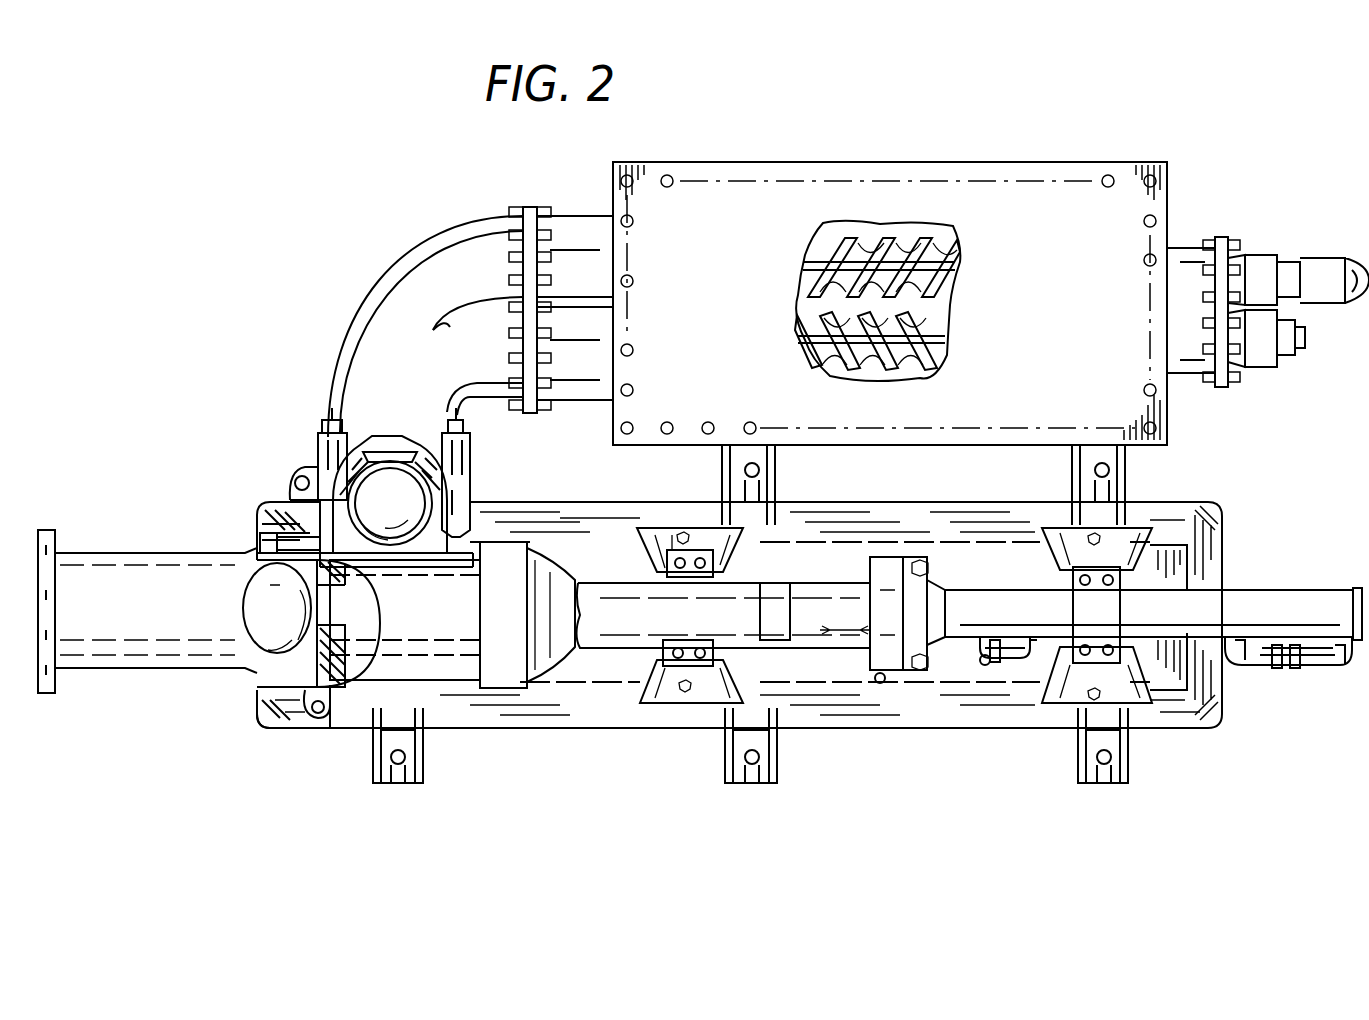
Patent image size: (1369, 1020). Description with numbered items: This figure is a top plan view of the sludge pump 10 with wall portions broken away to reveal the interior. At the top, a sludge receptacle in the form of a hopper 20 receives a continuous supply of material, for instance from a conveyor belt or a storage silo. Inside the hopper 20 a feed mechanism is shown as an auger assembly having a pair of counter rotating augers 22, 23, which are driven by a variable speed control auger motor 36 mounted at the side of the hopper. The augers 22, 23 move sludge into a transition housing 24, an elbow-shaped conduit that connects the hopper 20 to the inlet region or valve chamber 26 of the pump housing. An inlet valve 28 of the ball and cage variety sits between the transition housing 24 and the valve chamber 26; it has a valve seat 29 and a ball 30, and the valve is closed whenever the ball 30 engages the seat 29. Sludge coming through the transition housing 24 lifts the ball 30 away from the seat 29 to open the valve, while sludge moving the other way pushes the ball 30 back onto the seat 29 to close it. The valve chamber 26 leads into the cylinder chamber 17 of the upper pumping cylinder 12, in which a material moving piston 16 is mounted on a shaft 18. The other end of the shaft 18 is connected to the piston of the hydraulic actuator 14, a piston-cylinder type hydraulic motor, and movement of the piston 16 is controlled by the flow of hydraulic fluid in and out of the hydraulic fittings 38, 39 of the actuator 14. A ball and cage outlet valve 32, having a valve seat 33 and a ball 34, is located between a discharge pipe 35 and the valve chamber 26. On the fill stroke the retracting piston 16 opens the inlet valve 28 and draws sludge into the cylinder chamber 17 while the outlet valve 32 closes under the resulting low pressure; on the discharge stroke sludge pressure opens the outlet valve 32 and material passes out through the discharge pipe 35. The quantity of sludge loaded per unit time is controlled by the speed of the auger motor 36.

The sludge pump 10 is at (703, 146).
The upper pumping cylinder 12 is at (630, 662).
The hydraulic actuator 14 is at (1235, 600).
The material moving piston 16 is at (783, 590).
The cylinder chamber 17 is at (618, 620).
The shaft 18 is at (870, 640).
The hopper 20 is at (915, 190).
The auger 22 is at (822, 238).
The auger 23 is at (800, 326).
The transition housing 24 is at (395, 305).
The valve chamber 26 is at (432, 583).
The inlet valve 28 is at (305, 498).
The valve seat 29 is at (350, 462).
The ball 30 is at (392, 485).
The outlet valve 32 is at (294, 665).
The valve seat 33 is at (335, 660).
The ball 34 is at (268, 603).
The discharge pipe 35 is at (112, 585).
The auger motor 36 is at (1318, 262).
The hydraulic fitting 38 is at (1292, 668).
The hydraulic fitting 39 is at (1000, 660).